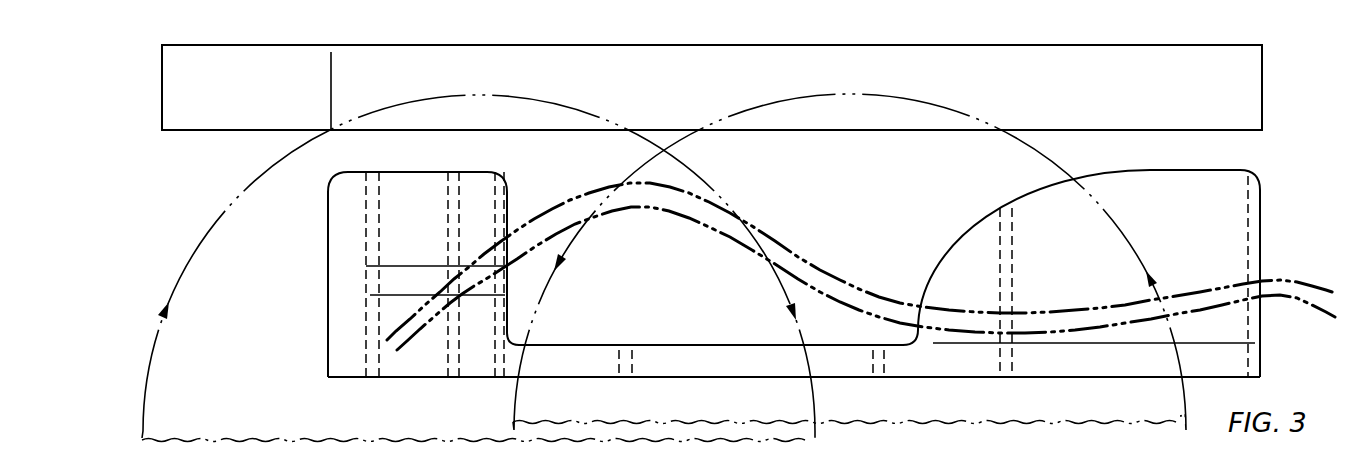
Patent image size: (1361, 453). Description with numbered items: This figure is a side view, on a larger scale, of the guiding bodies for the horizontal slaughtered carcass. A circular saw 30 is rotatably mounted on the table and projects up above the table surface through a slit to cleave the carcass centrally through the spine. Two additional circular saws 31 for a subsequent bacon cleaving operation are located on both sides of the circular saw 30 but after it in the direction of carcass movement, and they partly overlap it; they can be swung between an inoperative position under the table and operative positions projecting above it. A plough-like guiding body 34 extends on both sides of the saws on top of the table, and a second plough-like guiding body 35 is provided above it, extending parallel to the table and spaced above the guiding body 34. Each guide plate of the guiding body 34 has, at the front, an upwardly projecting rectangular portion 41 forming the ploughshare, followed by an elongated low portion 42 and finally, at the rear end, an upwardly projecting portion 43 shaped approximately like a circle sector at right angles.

The circular saw 30 is at (551, 100).
The additional circular saws 31 is at (874, 100).
The plough-like guiding body 34 is at (662, 337).
The second plough-like guiding body 35 is at (1248, 83).
The rectangular portion 41 is at (487, 188).
The elongated low portion 42 is at (677, 375).
The rear portion 43 is at (1233, 214).